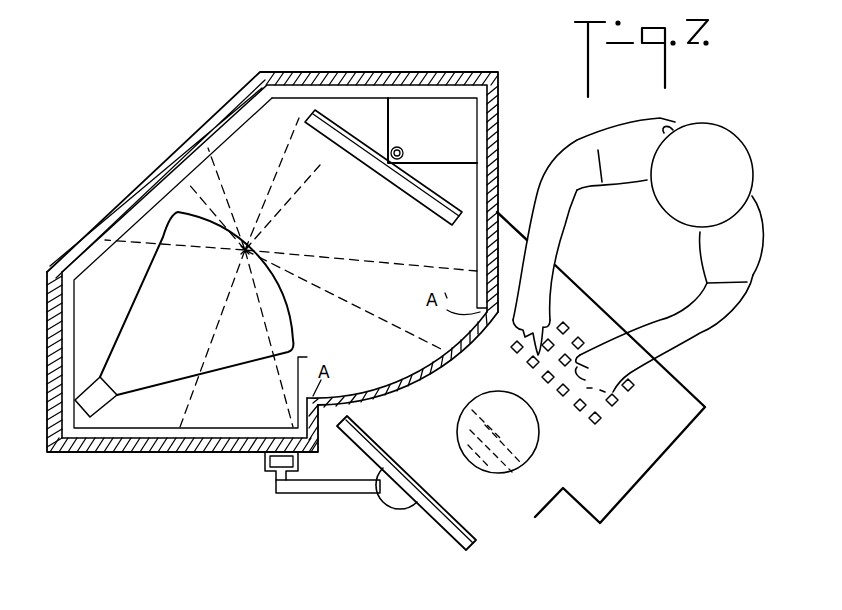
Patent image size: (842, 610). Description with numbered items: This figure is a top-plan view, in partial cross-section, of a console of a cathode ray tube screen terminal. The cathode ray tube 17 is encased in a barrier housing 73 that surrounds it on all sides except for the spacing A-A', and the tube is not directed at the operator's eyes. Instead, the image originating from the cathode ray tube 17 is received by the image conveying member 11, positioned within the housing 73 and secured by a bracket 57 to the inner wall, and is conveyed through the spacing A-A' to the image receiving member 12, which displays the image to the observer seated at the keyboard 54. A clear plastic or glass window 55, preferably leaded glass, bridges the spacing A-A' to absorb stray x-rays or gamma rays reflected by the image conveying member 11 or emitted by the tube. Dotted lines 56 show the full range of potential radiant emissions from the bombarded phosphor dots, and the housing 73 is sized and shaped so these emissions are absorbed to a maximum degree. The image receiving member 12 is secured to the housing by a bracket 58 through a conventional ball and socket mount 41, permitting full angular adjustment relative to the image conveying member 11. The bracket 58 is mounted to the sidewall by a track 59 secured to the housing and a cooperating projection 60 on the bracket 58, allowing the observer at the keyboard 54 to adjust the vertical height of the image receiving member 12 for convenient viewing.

The image conveying member 11 is at (305, 124).
The image receiving member 12 is at (471, 547).
The cathode ray tube 17 is at (293, 343).
The ball and socket mount 41 is at (392, 518).
The keyboard 54 is at (632, 388).
The window 55 is at (427, 370).
The dotted lines 56 is at (242, 252).
The bracket 57 is at (407, 157).
The bracket 58 is at (318, 495).
The track 59 is at (263, 471).
The projection 60 is at (262, 458).
The housing 73 is at (140, 188).